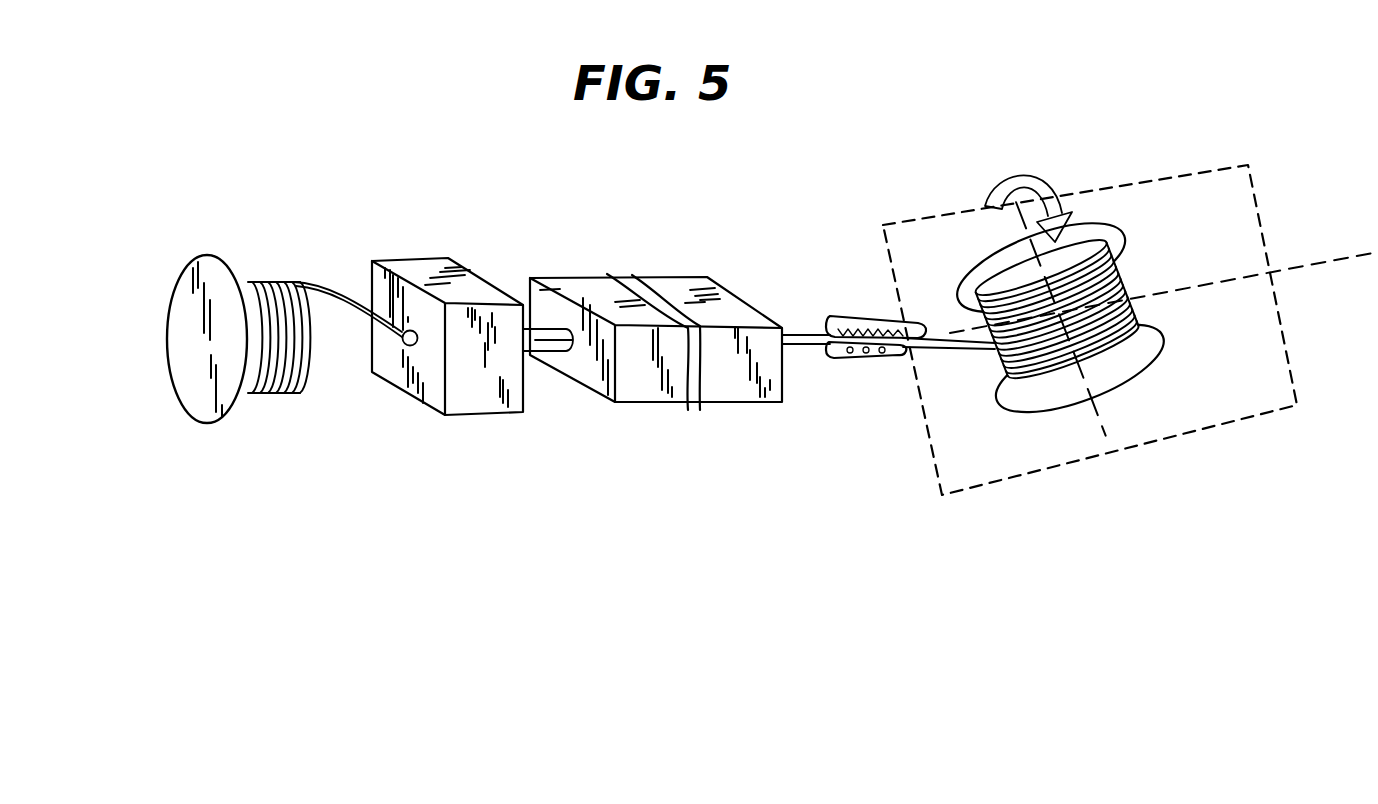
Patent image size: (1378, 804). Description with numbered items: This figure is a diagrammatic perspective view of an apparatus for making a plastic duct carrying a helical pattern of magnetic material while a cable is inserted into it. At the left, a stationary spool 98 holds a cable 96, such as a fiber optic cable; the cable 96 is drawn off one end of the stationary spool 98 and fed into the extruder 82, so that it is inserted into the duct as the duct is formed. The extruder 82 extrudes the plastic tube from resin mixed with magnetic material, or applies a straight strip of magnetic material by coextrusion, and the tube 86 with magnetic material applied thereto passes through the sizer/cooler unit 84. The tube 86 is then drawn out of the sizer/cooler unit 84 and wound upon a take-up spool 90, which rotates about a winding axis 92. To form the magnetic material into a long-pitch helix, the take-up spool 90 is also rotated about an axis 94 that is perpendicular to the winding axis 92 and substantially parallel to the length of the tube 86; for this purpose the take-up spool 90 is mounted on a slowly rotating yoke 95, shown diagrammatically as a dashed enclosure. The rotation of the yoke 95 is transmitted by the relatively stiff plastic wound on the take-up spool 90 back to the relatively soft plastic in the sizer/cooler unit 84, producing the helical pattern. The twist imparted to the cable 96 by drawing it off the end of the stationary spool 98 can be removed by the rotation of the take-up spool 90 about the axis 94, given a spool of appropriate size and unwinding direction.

The extruder 82 is at (463, 266).
The sizer/cooler unit 84 is at (591, 265).
The tube 86 is at (811, 333).
The take-up spool 90 is at (1108, 270).
The winding axis 92 is at (1076, 355).
The axis 94 is at (1181, 290).
The yoke 95 is at (1289, 269).
The cable 96 is at (355, 308).
The stationary spool 98 is at (198, 318).